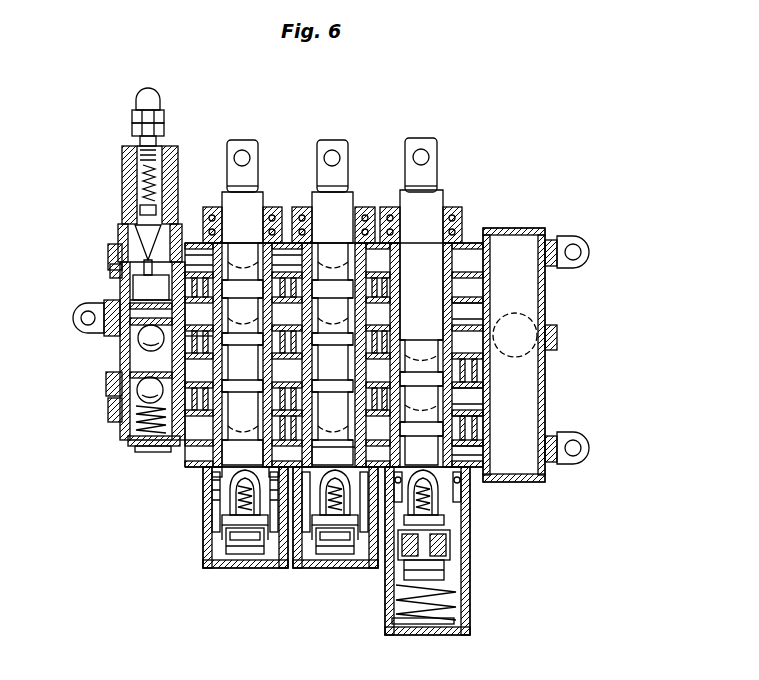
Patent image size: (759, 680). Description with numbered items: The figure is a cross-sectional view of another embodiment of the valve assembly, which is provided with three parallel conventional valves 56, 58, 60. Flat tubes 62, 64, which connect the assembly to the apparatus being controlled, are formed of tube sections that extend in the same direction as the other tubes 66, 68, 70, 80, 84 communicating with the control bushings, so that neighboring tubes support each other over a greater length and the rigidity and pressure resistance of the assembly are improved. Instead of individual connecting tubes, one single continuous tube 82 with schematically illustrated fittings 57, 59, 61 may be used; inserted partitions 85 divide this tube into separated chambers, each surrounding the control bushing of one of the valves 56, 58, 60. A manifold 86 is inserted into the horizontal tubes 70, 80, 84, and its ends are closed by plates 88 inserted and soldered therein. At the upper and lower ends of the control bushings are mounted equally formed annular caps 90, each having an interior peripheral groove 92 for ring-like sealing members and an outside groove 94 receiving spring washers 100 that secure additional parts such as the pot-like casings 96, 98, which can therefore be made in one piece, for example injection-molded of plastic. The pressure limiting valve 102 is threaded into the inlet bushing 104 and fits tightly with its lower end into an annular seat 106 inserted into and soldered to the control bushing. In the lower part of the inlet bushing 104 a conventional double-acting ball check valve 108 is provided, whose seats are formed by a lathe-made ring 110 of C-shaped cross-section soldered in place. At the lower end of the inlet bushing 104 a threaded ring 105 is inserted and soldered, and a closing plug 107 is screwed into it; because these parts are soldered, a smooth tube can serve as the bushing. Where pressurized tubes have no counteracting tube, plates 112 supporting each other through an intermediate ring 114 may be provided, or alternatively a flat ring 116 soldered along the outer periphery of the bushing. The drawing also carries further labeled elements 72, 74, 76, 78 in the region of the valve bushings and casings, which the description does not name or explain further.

The valve 56 is at (230, 170).
The fitting 57 is at (213, 513).
The valve 58 is at (326, 143).
The fitting 59 is at (348, 550).
The valve 60 is at (432, 166).
The fitting 61 is at (420, 452).
The flat tube 62 is at (206, 272).
The flat tube 64 is at (300, 267).
The tube 66 is at (468, 257).
The tube 68 is at (107, 332).
The horizontal tube 70 is at (211, 343).
The passage 72 is at (463, 353).
The spring retainer 74 is at (205, 432).
The outlet port 76 is at (555, 334).
The passage 78 is at (465, 392).
The horizontal tube 80 is at (207, 473).
The continuous tube 82 is at (345, 447).
The horizontal tube 84 is at (108, 255).
The partition 85 is at (444, 417).
The manifold 86 is at (518, 257).
The plate 88 is at (527, 483).
The annular cap 90 is at (360, 207).
The peripheral groove 92 is at (370, 222).
The groove 94 is at (462, 232).
The pot-like casing 96 is at (467, 547).
The pot-like casing 98 is at (207, 565).
The spring washer 100 is at (461, 481).
The pressure limiting valve 102 is at (125, 157).
The inlet bushing 104 is at (120, 232).
The threaded ring 105 is at (128, 436).
The annular seat 106 is at (90, 306).
The closing plug 107 is at (140, 452).
The double-acting ball check valve 108 is at (120, 372).
The ring 110 is at (113, 387).
The plate 112 is at (112, 294).
The intermediate ring 114 is at (112, 347).
The flat ring 116 is at (117, 293).